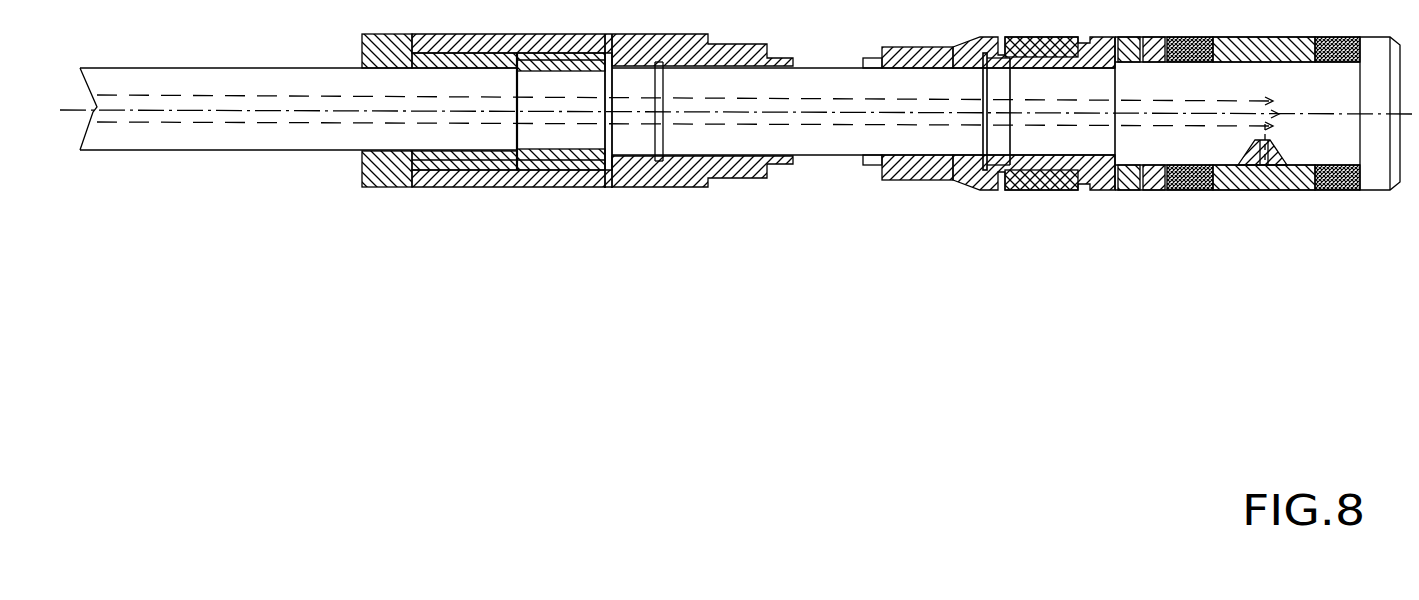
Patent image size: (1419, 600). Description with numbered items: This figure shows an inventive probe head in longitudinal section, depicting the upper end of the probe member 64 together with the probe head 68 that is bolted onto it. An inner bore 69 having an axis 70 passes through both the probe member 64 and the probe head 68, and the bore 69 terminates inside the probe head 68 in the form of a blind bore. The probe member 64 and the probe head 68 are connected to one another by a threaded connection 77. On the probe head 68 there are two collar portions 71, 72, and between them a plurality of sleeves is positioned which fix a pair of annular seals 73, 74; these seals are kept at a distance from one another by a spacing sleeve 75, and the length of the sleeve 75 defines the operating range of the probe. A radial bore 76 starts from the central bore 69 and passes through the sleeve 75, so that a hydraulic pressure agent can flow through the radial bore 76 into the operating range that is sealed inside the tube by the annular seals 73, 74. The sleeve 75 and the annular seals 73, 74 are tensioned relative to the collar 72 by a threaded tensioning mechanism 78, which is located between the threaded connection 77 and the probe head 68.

The probe member 64 is at (122, 137).
The probe head 68 is at (1150, 145).
The inner bore 69 is at (207, 125).
The axis 70 is at (267, 110).
The collar portion 71 is at (985, 190).
The collar portion 72 is at (1378, 190).
The annular seal 73 is at (1200, 190).
The annular seal 74 is at (1337, 190).
The spacing sleeve 75 is at (1242, 190).
The radial bore 76 is at (1266, 190).
The threaded connection 77 is at (552, 224).
The threaded tensioning mechanism 78 is at (1060, 224).